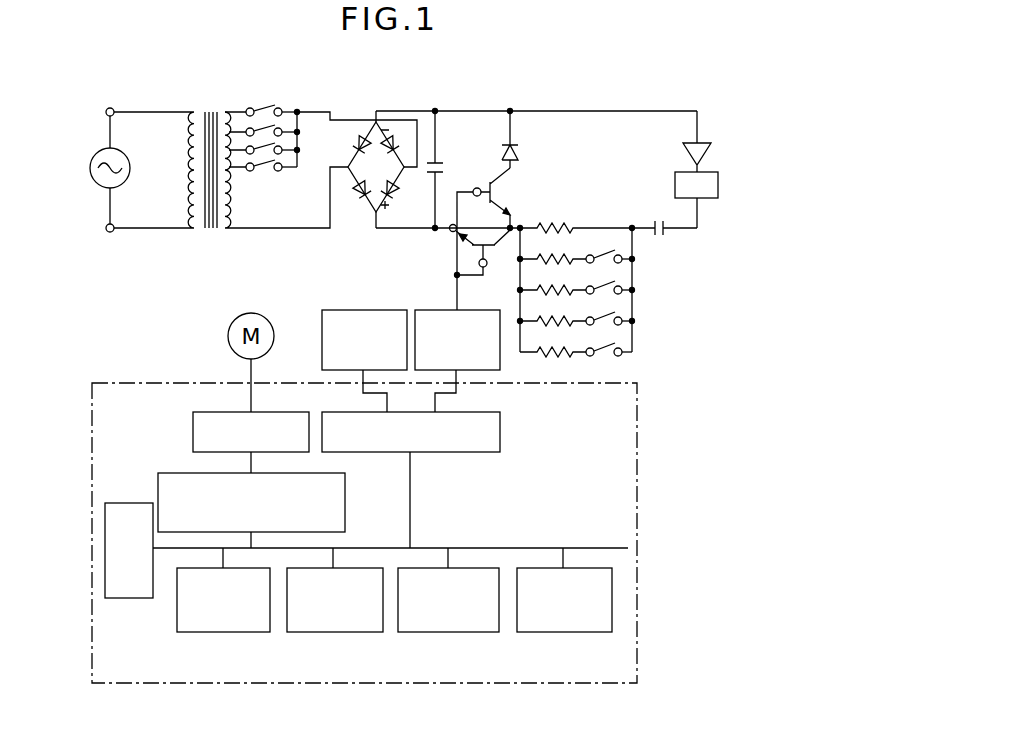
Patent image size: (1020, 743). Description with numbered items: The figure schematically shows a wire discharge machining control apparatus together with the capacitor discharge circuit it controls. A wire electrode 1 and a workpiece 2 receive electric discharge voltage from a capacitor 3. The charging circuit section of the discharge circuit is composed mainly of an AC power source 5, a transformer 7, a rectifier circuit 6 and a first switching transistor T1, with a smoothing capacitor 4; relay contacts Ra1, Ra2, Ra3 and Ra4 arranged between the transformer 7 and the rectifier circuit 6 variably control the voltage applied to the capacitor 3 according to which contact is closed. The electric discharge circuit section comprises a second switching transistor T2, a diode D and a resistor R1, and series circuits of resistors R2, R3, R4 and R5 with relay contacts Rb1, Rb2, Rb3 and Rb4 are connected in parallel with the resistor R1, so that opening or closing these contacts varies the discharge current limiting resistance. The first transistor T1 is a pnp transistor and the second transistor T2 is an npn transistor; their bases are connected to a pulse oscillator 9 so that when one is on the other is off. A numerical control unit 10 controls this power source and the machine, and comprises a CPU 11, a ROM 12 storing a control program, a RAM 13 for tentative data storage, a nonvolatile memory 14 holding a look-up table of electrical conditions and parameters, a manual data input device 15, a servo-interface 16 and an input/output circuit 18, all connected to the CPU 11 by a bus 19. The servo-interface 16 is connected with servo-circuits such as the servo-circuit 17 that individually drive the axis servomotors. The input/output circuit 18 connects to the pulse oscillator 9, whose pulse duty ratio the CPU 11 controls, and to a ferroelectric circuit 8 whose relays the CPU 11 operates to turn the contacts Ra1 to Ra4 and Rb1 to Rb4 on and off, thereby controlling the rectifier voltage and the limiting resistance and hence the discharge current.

The wire electrode 1 is at (712, 150).
The workpiece 2 is at (718, 184).
The capacitor 3 is at (657, 220).
The smoothing capacitor 4 is at (440, 160).
The AC power source 5 is at (93, 153).
The rectifier circuit 6 is at (372, 197).
The transformer 7 is at (205, 230).
The ferroelectric circuit 8 is at (365, 310).
The pulse oscillator 9 is at (434, 310).
The numerical control unit 10 is at (637, 467).
The central processing unit 11 is at (130, 598).
The ROM 12 is at (223, 632).
The RAM 13 is at (333, 632).
The nonvolatile memory 14 is at (453, 632).
The manual data input device 15 is at (567, 632).
The servo-interface 16 is at (178, 473).
The servo-circuit 17 is at (193, 428).
The input/output circuit 18 is at (502, 434).
The bus 19 is at (580, 548).
The diode D is at (520, 148).
The first switching transistor T1 is at (490, 252).
The second switching transistor T2 is at (512, 189).
The resistor R1 is at (576, 218).
The resistor R2 is at (552, 249).
The resistor R3 is at (552, 280).
The resistor R4 is at (552, 311).
The resistor R5 is at (553, 342).
The relay contact Ra1 is at (252, 109).
The relay contact Ra2 is at (283, 128).
The relay contact Ra3 is at (283, 148).
The relay contact Ra4 is at (279, 171).
The relay contact Rb1 is at (634, 257).
The relay contact Rb2 is at (634, 288).
The relay contact Rb3 is at (634, 319).
The relay contact Rb4 is at (634, 350).